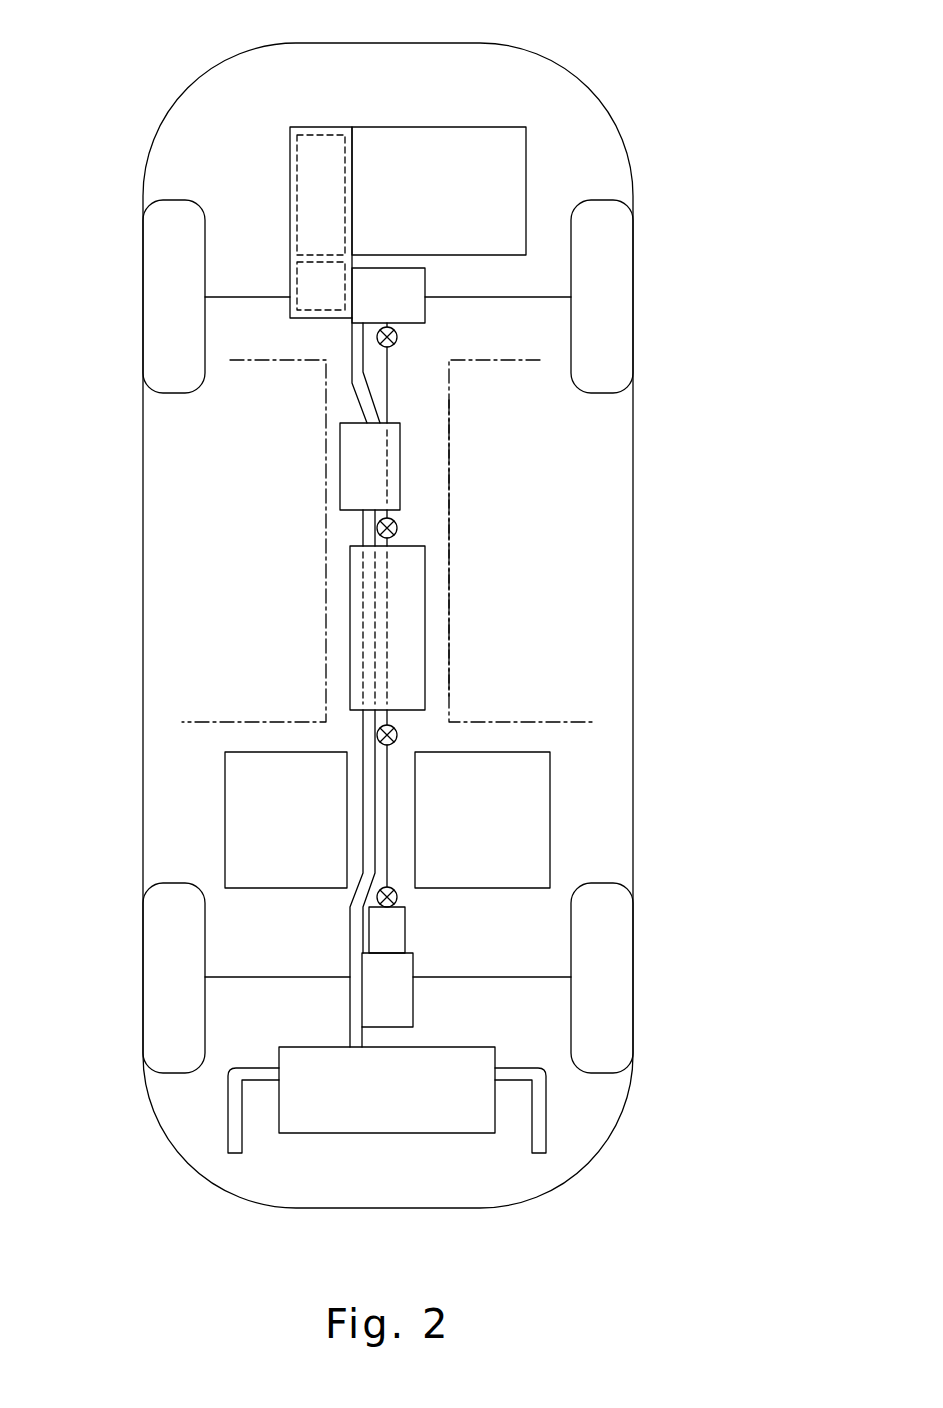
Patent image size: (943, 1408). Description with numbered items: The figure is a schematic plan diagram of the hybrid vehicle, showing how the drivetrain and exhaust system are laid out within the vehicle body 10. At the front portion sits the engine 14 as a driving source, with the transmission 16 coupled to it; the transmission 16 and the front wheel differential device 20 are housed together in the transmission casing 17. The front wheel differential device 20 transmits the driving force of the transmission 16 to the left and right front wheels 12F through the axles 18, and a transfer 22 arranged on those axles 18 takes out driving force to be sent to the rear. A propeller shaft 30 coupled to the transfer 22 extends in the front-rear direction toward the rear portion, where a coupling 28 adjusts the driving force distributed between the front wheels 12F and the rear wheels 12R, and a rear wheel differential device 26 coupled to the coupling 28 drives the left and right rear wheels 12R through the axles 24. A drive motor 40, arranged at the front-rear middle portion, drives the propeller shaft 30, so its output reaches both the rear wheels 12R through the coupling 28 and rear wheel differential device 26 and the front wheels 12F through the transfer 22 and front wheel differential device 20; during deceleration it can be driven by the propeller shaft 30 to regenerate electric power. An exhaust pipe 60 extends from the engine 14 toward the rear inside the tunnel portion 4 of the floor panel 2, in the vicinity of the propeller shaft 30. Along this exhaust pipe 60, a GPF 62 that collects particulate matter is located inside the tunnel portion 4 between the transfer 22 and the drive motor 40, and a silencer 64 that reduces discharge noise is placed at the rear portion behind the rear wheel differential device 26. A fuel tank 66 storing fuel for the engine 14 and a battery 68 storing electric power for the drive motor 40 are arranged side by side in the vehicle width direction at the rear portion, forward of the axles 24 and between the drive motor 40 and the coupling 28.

The vehicle body 10 is at (619, 83).
The front wheels 12F is at (143, 237).
The rear wheels 12R is at (143, 953).
The engine 14 is at (428, 127).
The transmission 16 is at (290, 168).
The transmission casing 17 is at (336, 127).
The axles 18 is at (258, 298).
The front wheel differential device 20 is at (297, 268).
The transfer 22 is at (347, 295).
The axles 24 is at (258, 977).
The rear wheel differential device 26 is at (413, 1005).
The coupling 28 is at (405, 930).
The propeller shaft 30 is at (390, 393).
The floor panel 2 is at (449, 540).
The tunnel portion 4 is at (449, 625).
The drive motor 40 is at (425, 682).
The exhaust pipe 60 is at (363, 530).
The GPF 62 is at (340, 480).
The silencer 64 is at (378, 1133).
The fuel tank 66 is at (550, 778).
The battery 68 is at (225, 805).